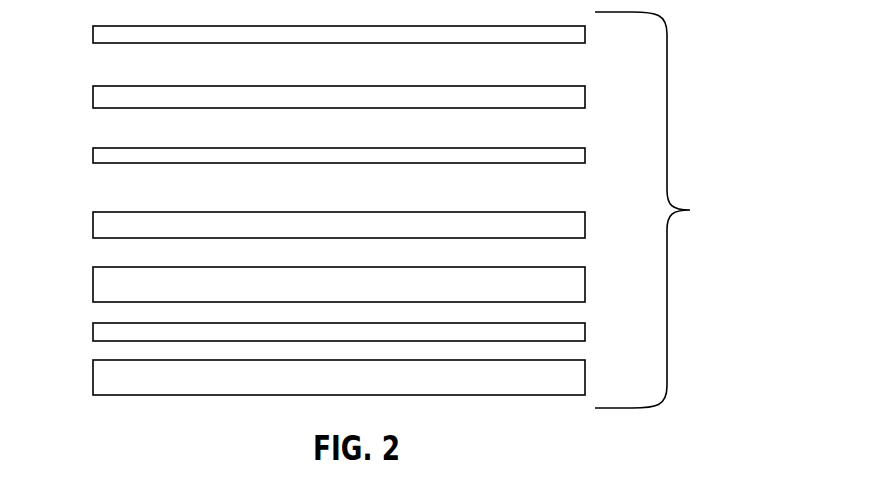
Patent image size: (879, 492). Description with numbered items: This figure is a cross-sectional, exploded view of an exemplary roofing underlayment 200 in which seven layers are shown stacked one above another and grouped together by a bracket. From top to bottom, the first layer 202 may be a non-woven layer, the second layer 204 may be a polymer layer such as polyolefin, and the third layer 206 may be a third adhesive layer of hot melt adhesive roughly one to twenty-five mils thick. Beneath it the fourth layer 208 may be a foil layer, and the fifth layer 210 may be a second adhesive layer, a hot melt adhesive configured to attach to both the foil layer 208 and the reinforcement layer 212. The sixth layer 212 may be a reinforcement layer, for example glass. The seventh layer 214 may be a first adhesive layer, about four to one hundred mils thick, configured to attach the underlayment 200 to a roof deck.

The underlayment 200 is at (690, 210).
The first layer 202 is at (306, 34).
The second layer 204 is at (306, 97).
The third layer 206 is at (306, 156).
The fourth layer 208 is at (306, 226).
The fifth layer 210 is at (306, 285).
The sixth layer 212 is at (306, 334).
The seventh layer 214 is at (306, 377).